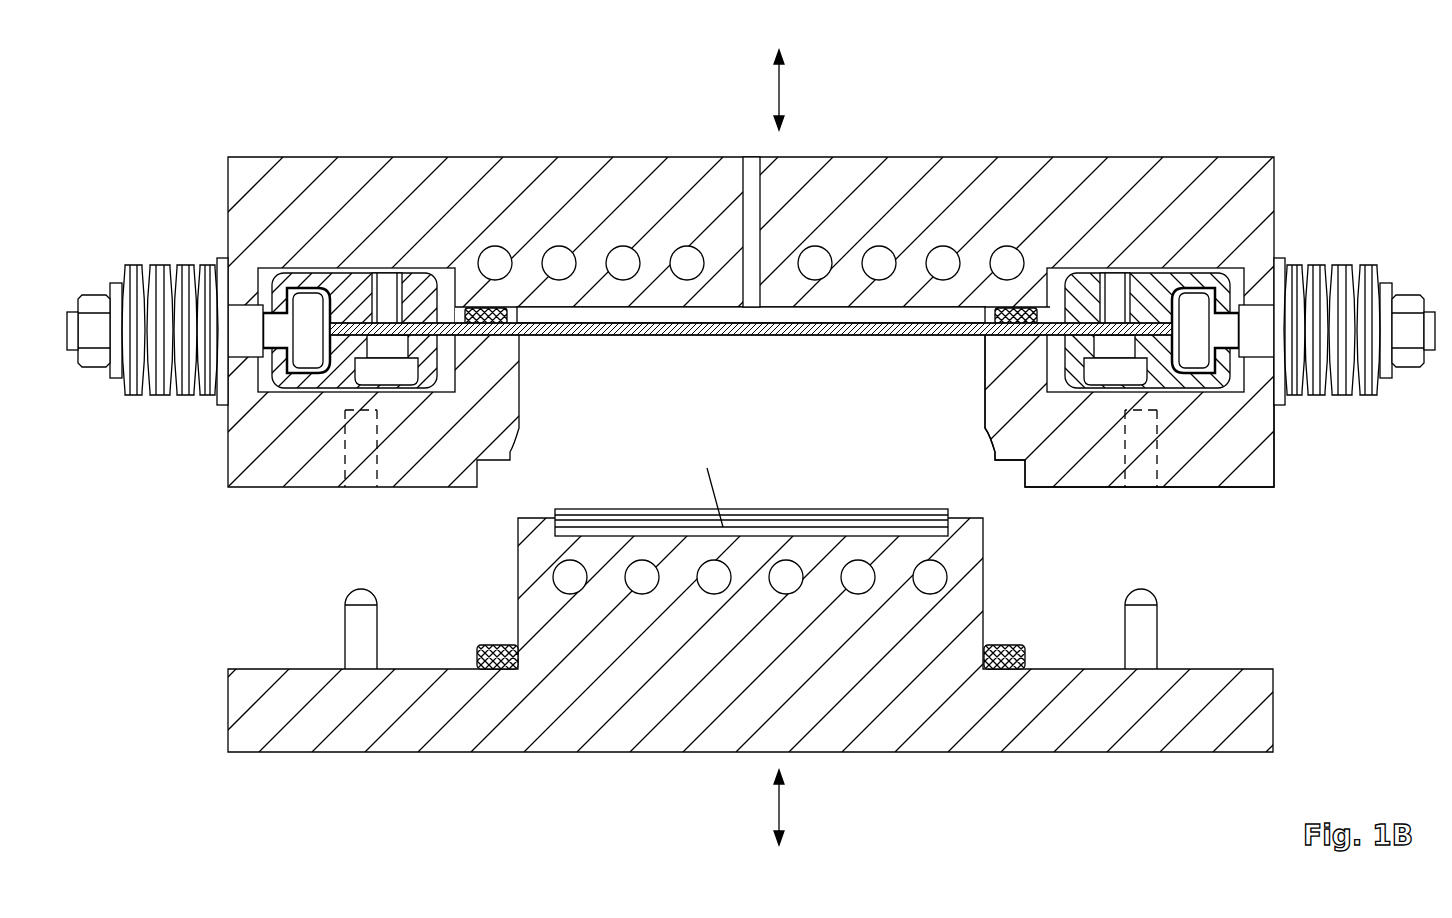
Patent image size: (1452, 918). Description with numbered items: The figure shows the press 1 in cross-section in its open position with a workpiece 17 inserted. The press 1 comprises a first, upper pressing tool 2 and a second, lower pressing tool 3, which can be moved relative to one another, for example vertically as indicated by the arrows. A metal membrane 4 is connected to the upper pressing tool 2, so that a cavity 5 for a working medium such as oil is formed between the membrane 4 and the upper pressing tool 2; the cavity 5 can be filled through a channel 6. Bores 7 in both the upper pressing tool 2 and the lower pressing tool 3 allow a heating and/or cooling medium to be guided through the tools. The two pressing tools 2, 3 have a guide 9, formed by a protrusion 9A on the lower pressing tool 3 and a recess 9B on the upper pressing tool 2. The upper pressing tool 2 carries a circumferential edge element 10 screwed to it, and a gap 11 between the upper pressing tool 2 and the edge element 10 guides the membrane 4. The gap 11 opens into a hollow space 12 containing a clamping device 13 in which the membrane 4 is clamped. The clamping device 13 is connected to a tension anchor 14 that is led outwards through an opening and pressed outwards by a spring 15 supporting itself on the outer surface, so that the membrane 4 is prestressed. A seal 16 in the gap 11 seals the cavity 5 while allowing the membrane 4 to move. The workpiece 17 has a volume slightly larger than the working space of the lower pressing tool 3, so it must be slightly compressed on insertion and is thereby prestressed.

The press 1 is at (204, 137).
The upper pressing tool 2 is at (1227, 168).
The lower pressing tool 3 is at (1253, 718).
The membrane 4 is at (650, 333).
The cavity 5 is at (747, 318).
The channel 6 is at (752, 172).
The bores 7 is at (940, 265).
The guide 9 is at (833, 539).
The protrusion 9A is at (1145, 627).
The recess 9B is at (1147, 457).
The edge element 10 is at (1255, 440).
The gap 11 is at (1013, 335).
The hollow space 12 is at (1058, 282).
The clamping device 13 is at (1153, 283).
The tension anchor 14 is at (1222, 278).
The spring 15 is at (1336, 273).
The seal 16 is at (1028, 312).
The workpiece 17 is at (827, 527).